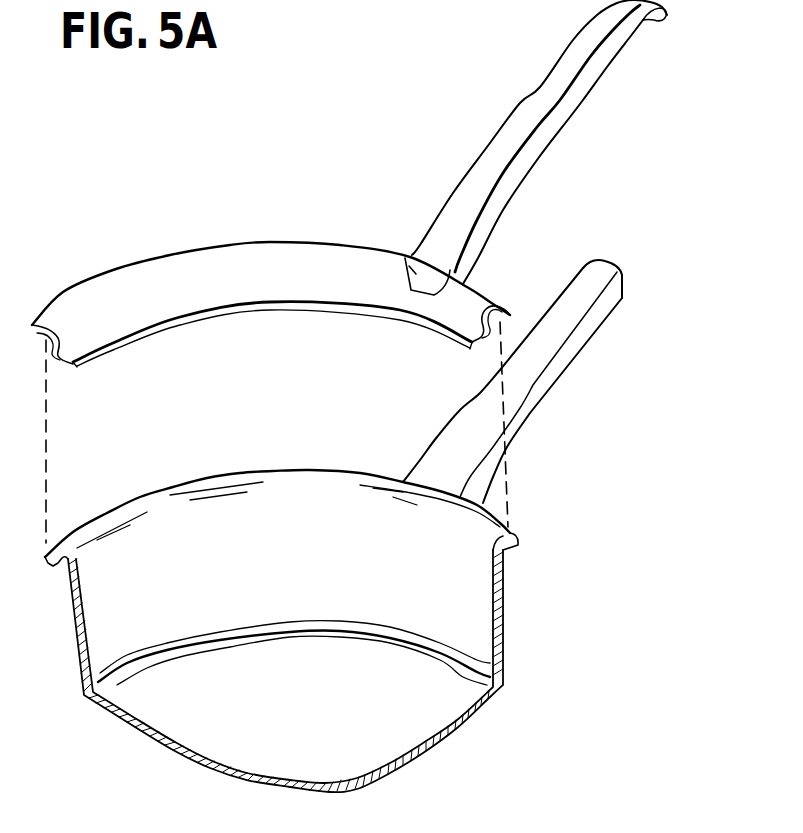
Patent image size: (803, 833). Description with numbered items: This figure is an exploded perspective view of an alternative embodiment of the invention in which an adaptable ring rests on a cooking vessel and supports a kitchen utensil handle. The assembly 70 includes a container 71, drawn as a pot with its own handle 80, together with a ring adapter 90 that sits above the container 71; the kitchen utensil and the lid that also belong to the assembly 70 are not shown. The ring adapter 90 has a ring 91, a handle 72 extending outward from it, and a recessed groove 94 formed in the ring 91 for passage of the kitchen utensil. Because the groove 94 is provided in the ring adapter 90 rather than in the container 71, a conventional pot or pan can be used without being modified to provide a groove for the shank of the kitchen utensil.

The assembly 70 is at (580, 213).
The container 71 is at (503, 597).
The ring handle 72 is at (538, 90).
The pan handle 80 is at (590, 337).
The ring adapter 90 is at (233, 244).
The ring 91 is at (77, 285).
The recessed groove 94 is at (407, 260).